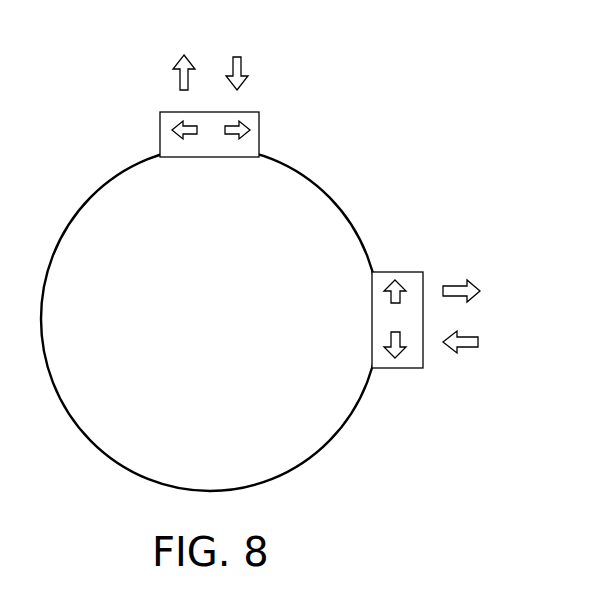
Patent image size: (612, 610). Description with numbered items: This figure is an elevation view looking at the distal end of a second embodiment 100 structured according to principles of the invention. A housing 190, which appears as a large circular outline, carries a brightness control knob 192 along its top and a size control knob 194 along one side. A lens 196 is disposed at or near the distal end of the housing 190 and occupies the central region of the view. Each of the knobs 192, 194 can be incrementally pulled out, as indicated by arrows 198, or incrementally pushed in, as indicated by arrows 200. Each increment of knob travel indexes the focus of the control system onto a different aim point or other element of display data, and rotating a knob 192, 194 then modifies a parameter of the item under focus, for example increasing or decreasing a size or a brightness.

The second embodiment 100 is at (464, 100).
The housing 190 is at (335, 203).
The brightness control knob 192 is at (250, 147).
The size control knob 194 is at (395, 369).
The lens 196 is at (237, 332).
The arrows indicating pull-out direction 198 is at (190, 56).
The arrows indicating push-in direction 200 is at (241, 66).